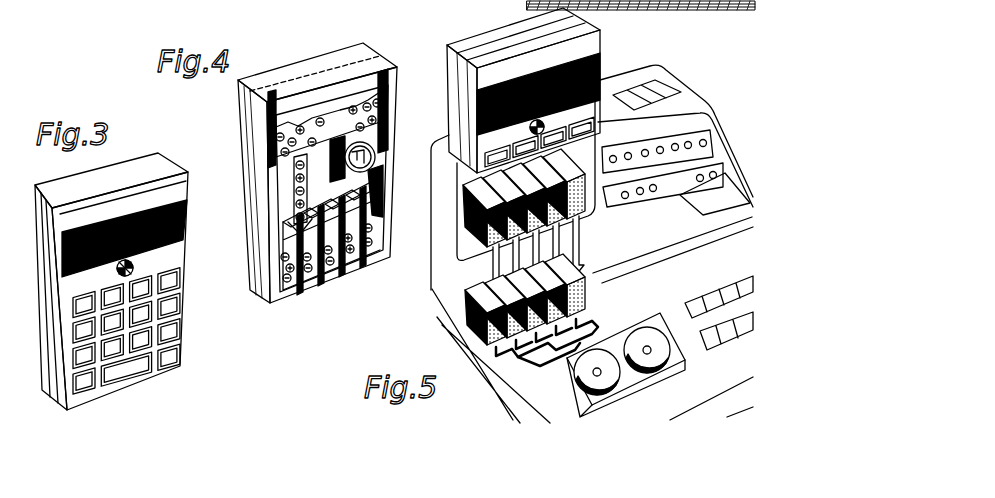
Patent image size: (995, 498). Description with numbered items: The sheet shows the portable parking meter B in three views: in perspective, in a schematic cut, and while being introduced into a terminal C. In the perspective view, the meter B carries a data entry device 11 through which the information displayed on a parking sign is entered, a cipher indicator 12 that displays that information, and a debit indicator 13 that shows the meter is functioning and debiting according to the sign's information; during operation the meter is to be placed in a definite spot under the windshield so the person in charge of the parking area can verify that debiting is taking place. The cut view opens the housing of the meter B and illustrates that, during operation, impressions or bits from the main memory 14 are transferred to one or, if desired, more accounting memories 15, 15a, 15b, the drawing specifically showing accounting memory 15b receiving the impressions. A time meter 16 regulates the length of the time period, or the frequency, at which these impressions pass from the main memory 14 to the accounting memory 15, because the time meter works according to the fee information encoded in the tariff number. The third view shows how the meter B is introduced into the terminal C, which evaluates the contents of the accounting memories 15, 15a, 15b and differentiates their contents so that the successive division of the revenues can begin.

In FIG. 3, the parking meter B is at (190, 182).
In FIG. 4, the parking meter B is at (292, 56).
In FIG. 5, the parking meter B is at (473, 31).
In FIG. 5, the terminal C is at (690, 98).
In FIG. 3, the data entry device 11 is at (172, 322).
In FIG. 3, the cipher indicator 12 is at (186, 208).
In FIG. 3, the debit indicator 13 is at (133, 265).
In FIG. 4, the main memory 14 is at (345, 130).
In FIG. 4, the accounting memory 15 is at (350, 262).
In FIG. 4, the accounting memory 15a is at (366, 248).
In FIG. 5, the accounting memory 15a is at (580, 198).
In FIG. 4, the accounting memory 15b is at (310, 275).
In FIG. 5, the accounting memory 15b is at (518, 228).
In FIG. 4, the time meter 16 is at (376, 162).